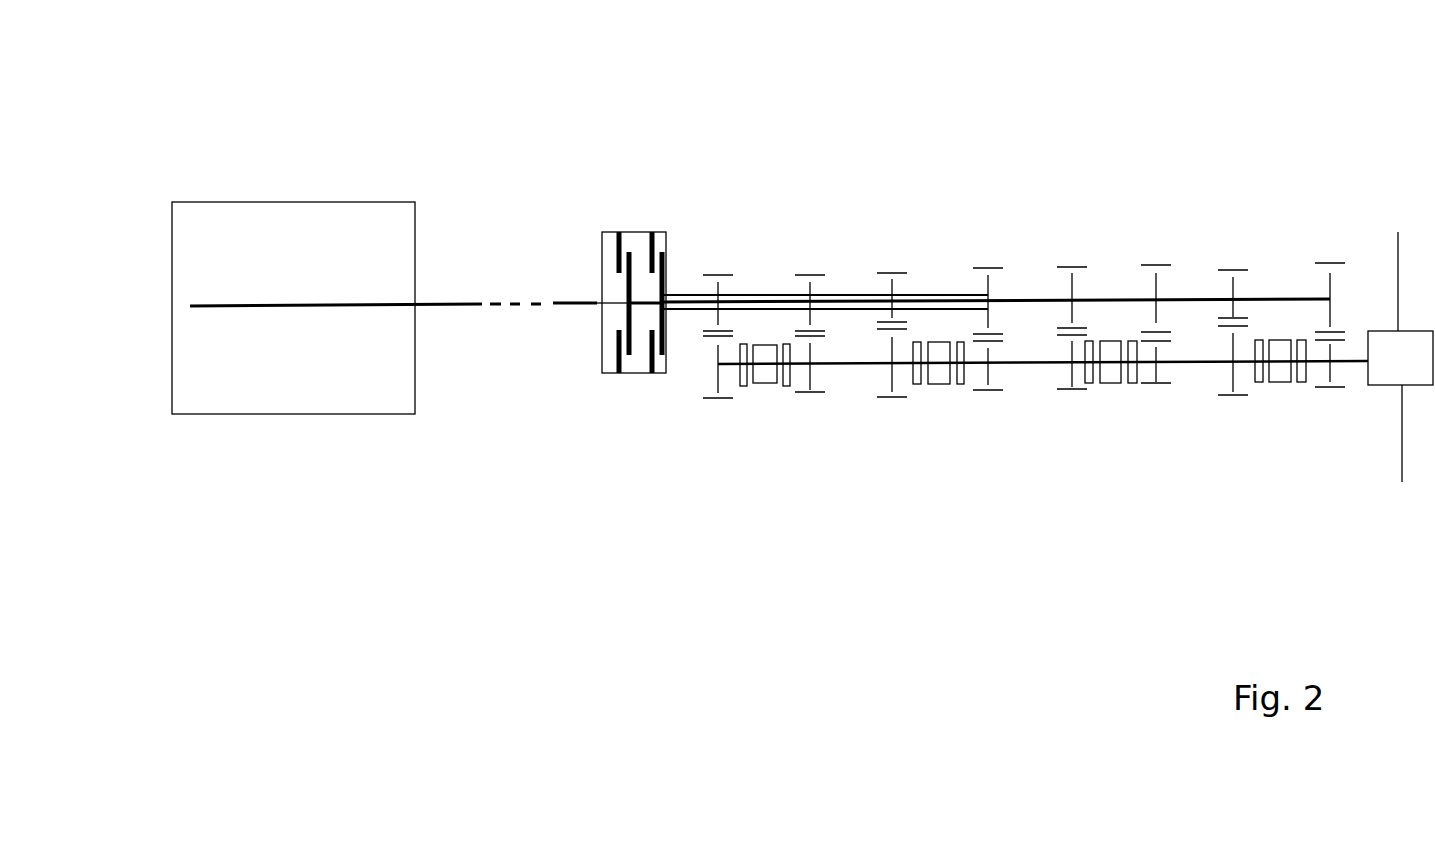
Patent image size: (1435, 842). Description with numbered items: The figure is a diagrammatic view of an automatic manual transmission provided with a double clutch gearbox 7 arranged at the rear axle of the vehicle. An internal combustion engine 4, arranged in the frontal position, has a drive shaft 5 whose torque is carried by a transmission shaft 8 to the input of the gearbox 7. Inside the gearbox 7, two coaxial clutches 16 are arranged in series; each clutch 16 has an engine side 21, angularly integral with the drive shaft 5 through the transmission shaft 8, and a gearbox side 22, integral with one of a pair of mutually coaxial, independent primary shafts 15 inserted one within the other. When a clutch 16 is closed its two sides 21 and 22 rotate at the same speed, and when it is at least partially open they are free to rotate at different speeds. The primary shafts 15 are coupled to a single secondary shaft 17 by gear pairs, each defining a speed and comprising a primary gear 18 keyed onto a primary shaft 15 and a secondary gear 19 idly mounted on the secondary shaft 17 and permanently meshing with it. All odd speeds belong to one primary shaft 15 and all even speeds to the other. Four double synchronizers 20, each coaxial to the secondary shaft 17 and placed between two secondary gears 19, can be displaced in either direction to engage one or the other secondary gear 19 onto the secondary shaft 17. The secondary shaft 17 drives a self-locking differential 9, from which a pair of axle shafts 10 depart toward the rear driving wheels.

The internal combustion engine 4 is at (256, 237).
The drive shaft 5 is at (341, 309).
The double clutch gearbox 7 is at (970, 116).
The transmission shaft 8 is at (557, 303).
The self-locking differential 9 is at (1400, 358).
The axle shafts 10 is at (1397, 233).
The primary shafts 15 is at (683, 292).
The clutches 16 is at (637, 336).
The secondary shaft 17 is at (865, 366).
The primary gear 18 is at (1072, 281).
The secondary gear 19 is at (1072, 378).
The double synchronizers 20 is at (767, 383).
The engine side 21 is at (652, 250).
The gearbox side 22 is at (629, 297).